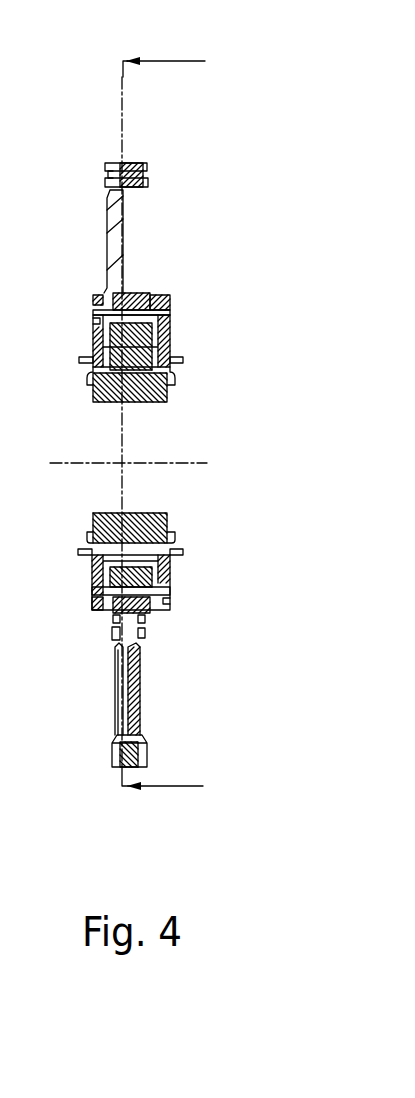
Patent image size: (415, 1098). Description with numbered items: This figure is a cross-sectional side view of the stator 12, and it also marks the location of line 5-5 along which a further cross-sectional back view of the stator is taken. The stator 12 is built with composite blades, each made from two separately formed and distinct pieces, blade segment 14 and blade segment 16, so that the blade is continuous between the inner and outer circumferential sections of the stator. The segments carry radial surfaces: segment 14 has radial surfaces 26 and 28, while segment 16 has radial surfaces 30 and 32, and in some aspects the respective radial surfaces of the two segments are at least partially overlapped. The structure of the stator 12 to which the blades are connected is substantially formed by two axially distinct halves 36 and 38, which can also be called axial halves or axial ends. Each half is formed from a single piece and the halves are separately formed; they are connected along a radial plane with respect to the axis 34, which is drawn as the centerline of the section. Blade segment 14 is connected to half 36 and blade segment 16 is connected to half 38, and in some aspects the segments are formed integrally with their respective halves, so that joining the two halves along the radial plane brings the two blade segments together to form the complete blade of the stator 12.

The line 5- 5 is at (174, 422).
The stator 12 is at (60, 95).
The blade segment 14 is at (100, 193).
The blade segment 16 is at (140, 705).
The radial surface 26 is at (123, 230).
The radial surface 28 is at (107, 244).
The radial surface 30 is at (121, 674).
The radial surface 32 is at (140, 687).
The axis 34 is at (157, 463).
The half 36 is at (98, 297).
The half 38 is at (155, 615).